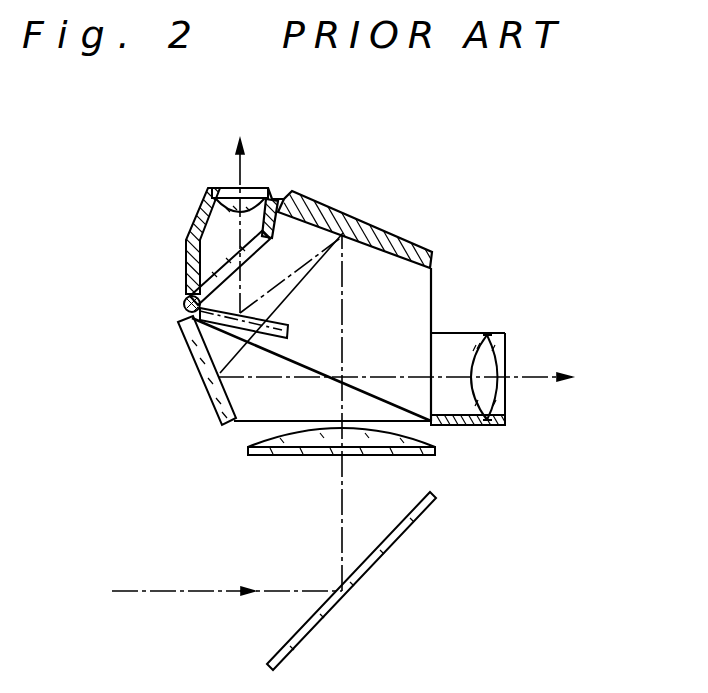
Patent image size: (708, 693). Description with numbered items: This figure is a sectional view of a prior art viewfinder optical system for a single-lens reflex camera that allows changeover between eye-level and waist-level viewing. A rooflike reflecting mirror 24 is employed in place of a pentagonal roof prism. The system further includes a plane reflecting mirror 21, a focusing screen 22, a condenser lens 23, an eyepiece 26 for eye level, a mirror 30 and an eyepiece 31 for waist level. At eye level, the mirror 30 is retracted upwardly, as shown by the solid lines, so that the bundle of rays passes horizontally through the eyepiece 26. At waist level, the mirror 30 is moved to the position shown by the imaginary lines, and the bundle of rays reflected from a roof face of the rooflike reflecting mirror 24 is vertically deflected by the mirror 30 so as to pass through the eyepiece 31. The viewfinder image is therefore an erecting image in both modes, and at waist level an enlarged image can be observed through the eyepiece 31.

The plane reflecting mirror 21 is at (373, 568).
The focusing screen 22 is at (433, 448).
The condenser lens 23 is at (435, 443).
The rooflike reflecting mirror 24 is at (413, 243).
The eyepiece for eye level 26 is at (538, 340).
The mirror 30 is at (185, 260).
The eyepiece for waist level 31 is at (222, 188).